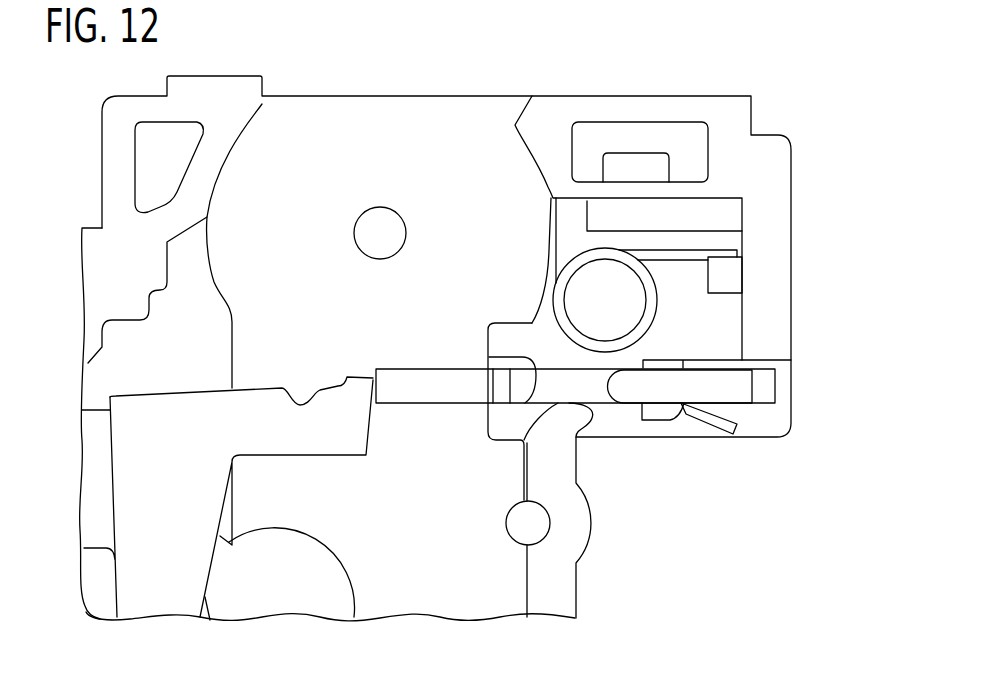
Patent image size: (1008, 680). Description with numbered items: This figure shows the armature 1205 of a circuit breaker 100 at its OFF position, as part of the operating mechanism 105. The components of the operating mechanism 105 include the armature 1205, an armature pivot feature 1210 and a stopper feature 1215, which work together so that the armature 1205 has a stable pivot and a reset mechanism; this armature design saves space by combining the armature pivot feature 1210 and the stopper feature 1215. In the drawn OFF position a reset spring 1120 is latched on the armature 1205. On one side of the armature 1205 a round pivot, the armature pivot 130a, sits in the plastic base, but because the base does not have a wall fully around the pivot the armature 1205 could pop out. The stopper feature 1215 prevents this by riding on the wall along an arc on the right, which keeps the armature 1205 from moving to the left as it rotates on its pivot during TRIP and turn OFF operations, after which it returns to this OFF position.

The device 100 is at (744, 35).
The airgap operating mechanism 105 is at (626, 528).
The armature pivot 130a is at (520, 382).
The reset spring 1120 is at (690, 256).
The armature 1205 is at (728, 390).
The armature pivot feature 1210 is at (473, 423).
The stopper feature 1215 is at (660, 420).